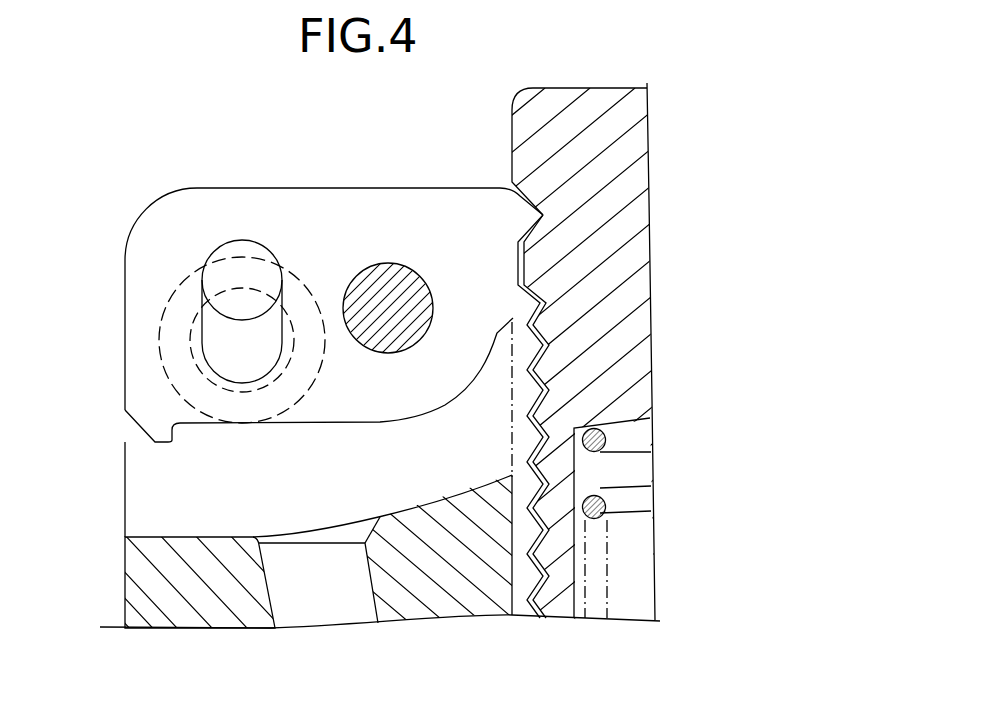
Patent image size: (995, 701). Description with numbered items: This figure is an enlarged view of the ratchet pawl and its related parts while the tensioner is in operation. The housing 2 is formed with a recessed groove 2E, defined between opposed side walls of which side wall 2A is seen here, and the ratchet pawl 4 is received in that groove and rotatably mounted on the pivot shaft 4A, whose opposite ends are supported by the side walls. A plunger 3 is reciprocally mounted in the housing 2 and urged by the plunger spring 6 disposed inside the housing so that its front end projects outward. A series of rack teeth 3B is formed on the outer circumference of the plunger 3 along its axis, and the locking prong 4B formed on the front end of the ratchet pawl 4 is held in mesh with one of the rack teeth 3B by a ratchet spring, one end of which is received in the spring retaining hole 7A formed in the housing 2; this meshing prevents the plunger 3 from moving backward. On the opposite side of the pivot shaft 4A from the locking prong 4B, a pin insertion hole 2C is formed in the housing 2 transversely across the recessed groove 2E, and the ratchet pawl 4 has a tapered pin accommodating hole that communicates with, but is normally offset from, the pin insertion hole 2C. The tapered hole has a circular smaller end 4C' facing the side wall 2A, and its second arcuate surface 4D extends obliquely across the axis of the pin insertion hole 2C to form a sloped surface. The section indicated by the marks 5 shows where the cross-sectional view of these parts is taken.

The housing 2 is at (158, 580).
The side wall 2A is at (143, 511).
The pin insertion hole 2C is at (193, 358).
The recessed groove 2E is at (140, 474).
The plunger 3 is at (625, 300).
The rack teeth 3B is at (540, 368).
The ratchet pawl 4 is at (335, 200).
The pivot shaft 4A is at (404, 277).
The locking prong 4B is at (530, 217).
The smaller end of tapered hole 4C' is at (205, 263).
The second arcuate surface 4D is at (213, 327).
The section line 5- 5 is at (238, 177).
The plunger spring 6 is at (598, 452).
The spring retaining hole 7A is at (343, 610).